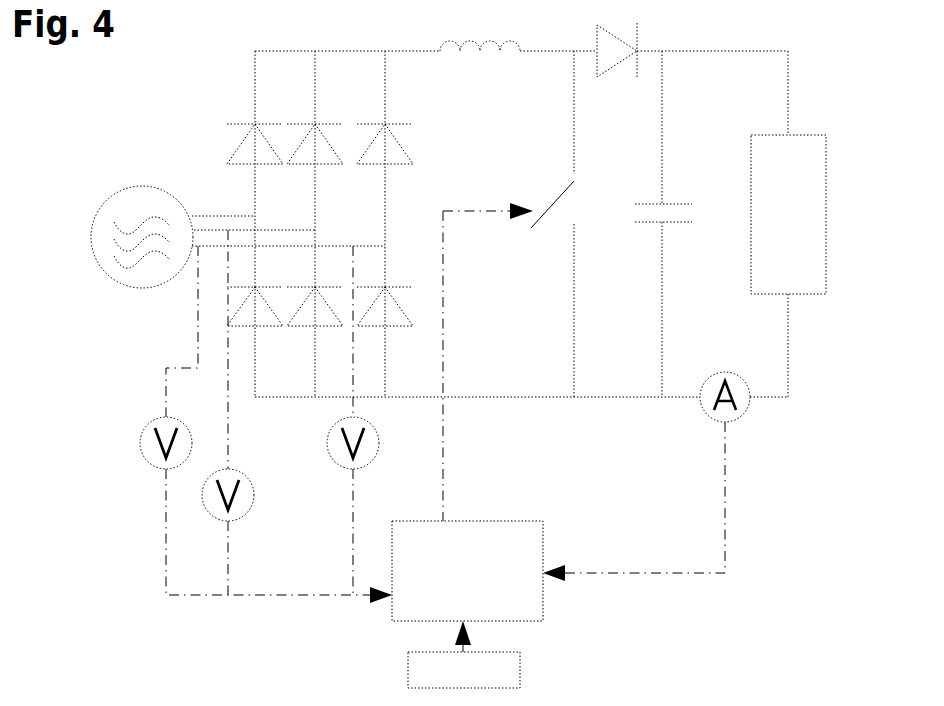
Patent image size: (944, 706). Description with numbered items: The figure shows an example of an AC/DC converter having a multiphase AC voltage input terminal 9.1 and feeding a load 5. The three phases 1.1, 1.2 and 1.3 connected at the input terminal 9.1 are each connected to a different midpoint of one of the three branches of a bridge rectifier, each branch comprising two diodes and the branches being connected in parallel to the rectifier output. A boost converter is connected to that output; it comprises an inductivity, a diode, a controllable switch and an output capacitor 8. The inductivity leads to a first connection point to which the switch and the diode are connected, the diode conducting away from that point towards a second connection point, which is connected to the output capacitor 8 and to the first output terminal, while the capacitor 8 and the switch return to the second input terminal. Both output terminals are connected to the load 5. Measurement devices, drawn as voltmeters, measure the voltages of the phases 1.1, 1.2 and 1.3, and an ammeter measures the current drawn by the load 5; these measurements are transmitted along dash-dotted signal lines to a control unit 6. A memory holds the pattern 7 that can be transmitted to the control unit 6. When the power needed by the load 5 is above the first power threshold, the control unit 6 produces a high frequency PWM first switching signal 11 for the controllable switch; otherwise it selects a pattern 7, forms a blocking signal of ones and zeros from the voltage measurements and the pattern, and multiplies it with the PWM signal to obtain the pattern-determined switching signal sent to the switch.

The multiphase AC voltage input terminal 9.1 is at (112, 203).
The phase 1.1 is at (203, 212).
The phase 1.2 is at (237, 231).
The phase 1.3 is at (216, 252).
The output capacitor 8 is at (672, 204).
The load 5 is at (810, 178).
The first switching signal 11 is at (447, 420).
The control unit 6 is at (533, 597).
The pattern 7 is at (410, 669).